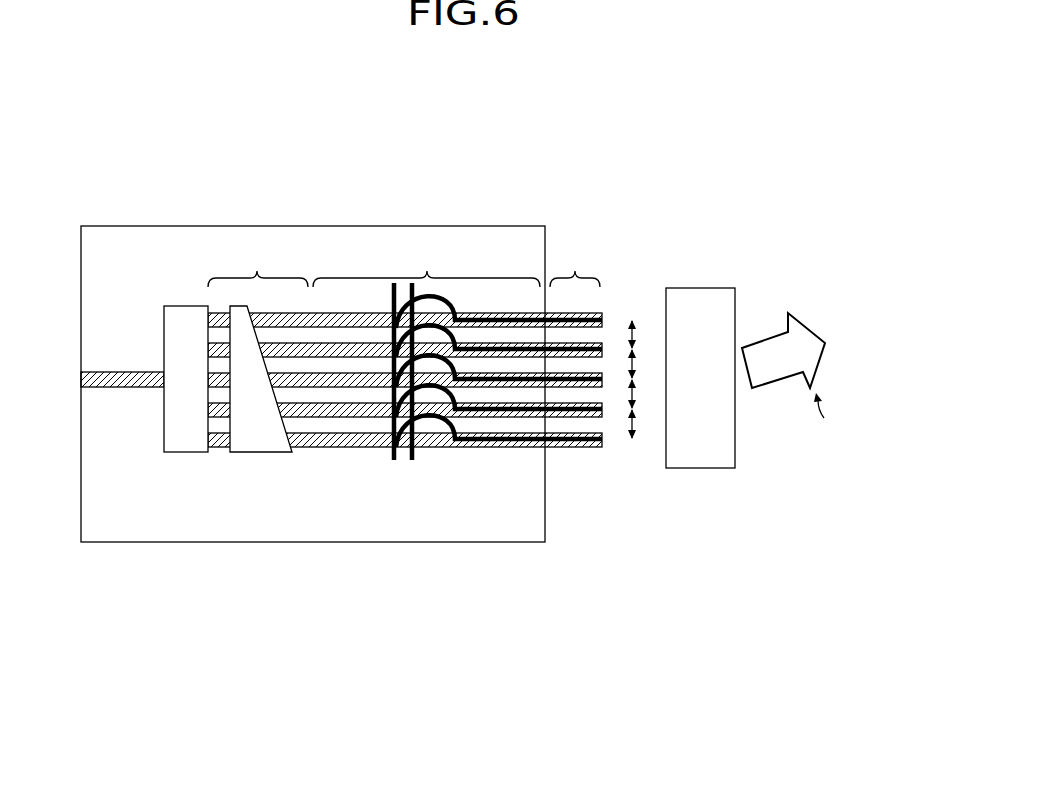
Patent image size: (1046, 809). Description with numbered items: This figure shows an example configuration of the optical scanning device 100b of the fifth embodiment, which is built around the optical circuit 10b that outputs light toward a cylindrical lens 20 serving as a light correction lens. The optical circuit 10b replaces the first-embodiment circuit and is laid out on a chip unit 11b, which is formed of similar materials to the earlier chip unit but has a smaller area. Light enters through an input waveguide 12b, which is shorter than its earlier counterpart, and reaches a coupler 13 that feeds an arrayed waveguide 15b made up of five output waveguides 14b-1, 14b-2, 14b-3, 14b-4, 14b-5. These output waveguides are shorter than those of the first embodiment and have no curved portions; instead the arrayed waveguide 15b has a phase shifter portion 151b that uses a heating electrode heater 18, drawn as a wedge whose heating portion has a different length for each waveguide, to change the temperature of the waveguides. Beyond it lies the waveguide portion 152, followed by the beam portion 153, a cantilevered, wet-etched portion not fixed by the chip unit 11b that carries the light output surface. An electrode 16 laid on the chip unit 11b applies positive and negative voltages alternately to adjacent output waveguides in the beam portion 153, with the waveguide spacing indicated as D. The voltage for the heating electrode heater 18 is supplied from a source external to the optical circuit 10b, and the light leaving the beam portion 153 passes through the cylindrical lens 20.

The optical scanning device 100b is at (706, 69).
The optical circuit 10b is at (80, 141).
The chip unit 11b is at (522, 542).
The input waveguide 12b is at (123, 387).
The coupler 13 is at (188, 453).
The heating electrode heater 18 is at (263, 453).
The output waveguide 14b-1 is at (372, 447).
The output waveguide 14b-2 is at (363, 417).
The output waveguide 14b-3 is at (358, 387).
The output waveguide 14b-4 is at (340, 357).
The output waveguide 14b-5 is at (329, 327).
The arrayed waveguide 15b is at (395, 189).
The phase shifter portion 151b is at (257, 271).
The waveguide portion 152 is at (427, 271).
The beam portion 153 is at (575, 271).
The electrode 16 is at (382, 474).
The cylindrical lens 20 is at (703, 468).
The waveguide pitch D is at (634, 447).